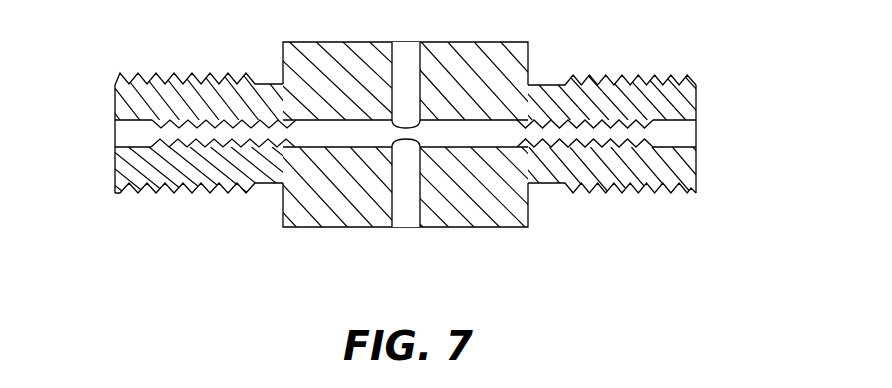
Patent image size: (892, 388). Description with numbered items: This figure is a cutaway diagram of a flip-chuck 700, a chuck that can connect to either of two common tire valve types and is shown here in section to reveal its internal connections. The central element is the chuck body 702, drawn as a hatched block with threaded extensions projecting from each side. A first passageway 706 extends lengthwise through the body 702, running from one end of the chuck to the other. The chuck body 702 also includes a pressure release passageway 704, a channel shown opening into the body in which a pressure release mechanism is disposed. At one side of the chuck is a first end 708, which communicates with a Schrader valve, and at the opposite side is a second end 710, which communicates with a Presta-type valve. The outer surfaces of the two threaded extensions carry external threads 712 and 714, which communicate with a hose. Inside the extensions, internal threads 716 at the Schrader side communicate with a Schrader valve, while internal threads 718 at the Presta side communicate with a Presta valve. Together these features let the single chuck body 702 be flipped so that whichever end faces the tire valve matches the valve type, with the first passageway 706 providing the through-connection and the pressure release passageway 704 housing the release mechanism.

The flip-chuck 700 is at (428, 311).
The chuck body 702 is at (454, 42).
The pressure release passageway 704 is at (409, 214).
The first passageway 706 is at (348, 117).
The first end 708 is at (160, 214).
The second end 710 is at (655, 217).
The external threads 712 is at (157, 66).
The external threads 714 is at (655, 65).
The internal threads 716 is at (114, 132).
The internal threads 718 is at (697, 135).